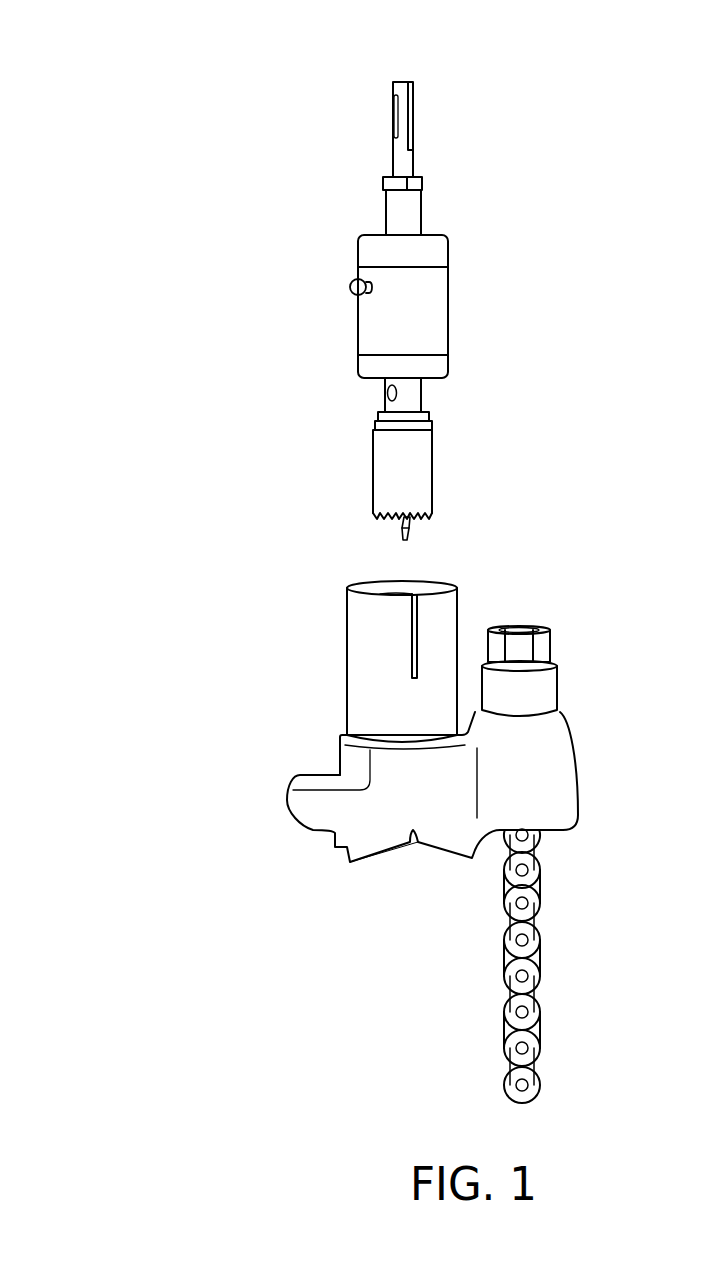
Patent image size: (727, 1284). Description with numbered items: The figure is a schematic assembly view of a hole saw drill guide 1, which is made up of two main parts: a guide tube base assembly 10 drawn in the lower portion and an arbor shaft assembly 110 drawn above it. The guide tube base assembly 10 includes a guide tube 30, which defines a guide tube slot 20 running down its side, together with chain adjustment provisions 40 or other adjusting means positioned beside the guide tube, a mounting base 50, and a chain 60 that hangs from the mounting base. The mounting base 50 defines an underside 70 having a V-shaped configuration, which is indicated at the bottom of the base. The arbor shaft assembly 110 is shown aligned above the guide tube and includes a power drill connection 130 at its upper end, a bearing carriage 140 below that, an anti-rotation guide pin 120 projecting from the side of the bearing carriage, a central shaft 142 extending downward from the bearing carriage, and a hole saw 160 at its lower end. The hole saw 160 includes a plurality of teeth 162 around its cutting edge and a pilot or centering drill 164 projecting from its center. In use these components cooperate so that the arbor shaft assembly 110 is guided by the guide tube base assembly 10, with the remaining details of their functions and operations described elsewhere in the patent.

The hole saw drill guide 1 is at (77, 86).
The guide tube base assembly 10 is at (227, 565).
The guide tube slot 20 is at (412, 658).
The guide tube 30 is at (455, 587).
The chain adjustment provisions 40 is at (560, 677).
The mounting base 50 is at (567, 800).
The chain 60 is at (538, 965).
The underside 70 is at (400, 880).
The arbor shaft assembly 110 is at (228, 78).
The anti-rotation guide pin 120 is at (350, 288).
The power drill connection 130 is at (413, 133).
The bearing carriage 140 is at (449, 309).
The central shaft 142 is at (422, 393).
The hole saw 160 is at (420, 473).
The teeth 162 is at (425, 522).
The pilot or centering drill 164 is at (402, 540).